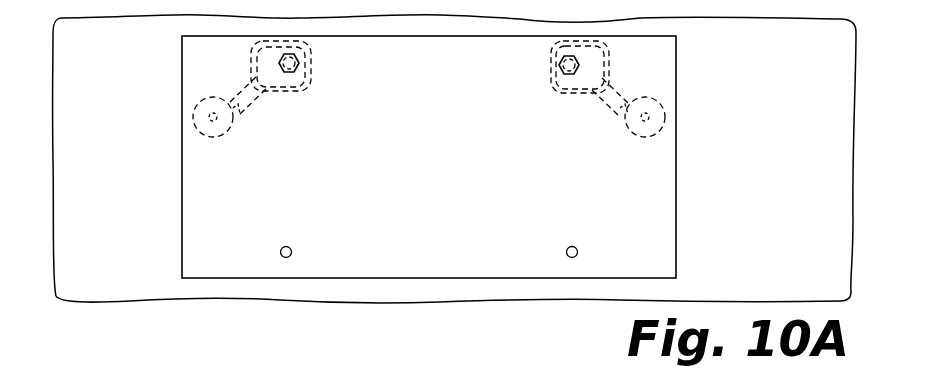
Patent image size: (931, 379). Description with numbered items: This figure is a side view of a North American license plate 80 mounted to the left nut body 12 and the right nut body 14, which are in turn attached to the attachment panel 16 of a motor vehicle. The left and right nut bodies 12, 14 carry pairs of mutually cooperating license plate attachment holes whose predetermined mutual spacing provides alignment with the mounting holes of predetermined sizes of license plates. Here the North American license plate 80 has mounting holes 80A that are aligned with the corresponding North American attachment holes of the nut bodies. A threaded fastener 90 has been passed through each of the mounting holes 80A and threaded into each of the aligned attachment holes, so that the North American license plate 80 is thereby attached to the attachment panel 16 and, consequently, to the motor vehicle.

The left nut body 12 is at (248, 116).
The right nut body 14 is at (615, 110).
The attachment panel 16 is at (408, 306).
The North American license plate 80 is at (678, 182).
The mounting holes 80A is at (312, 61).
The threaded fastener 90 is at (280, 63).